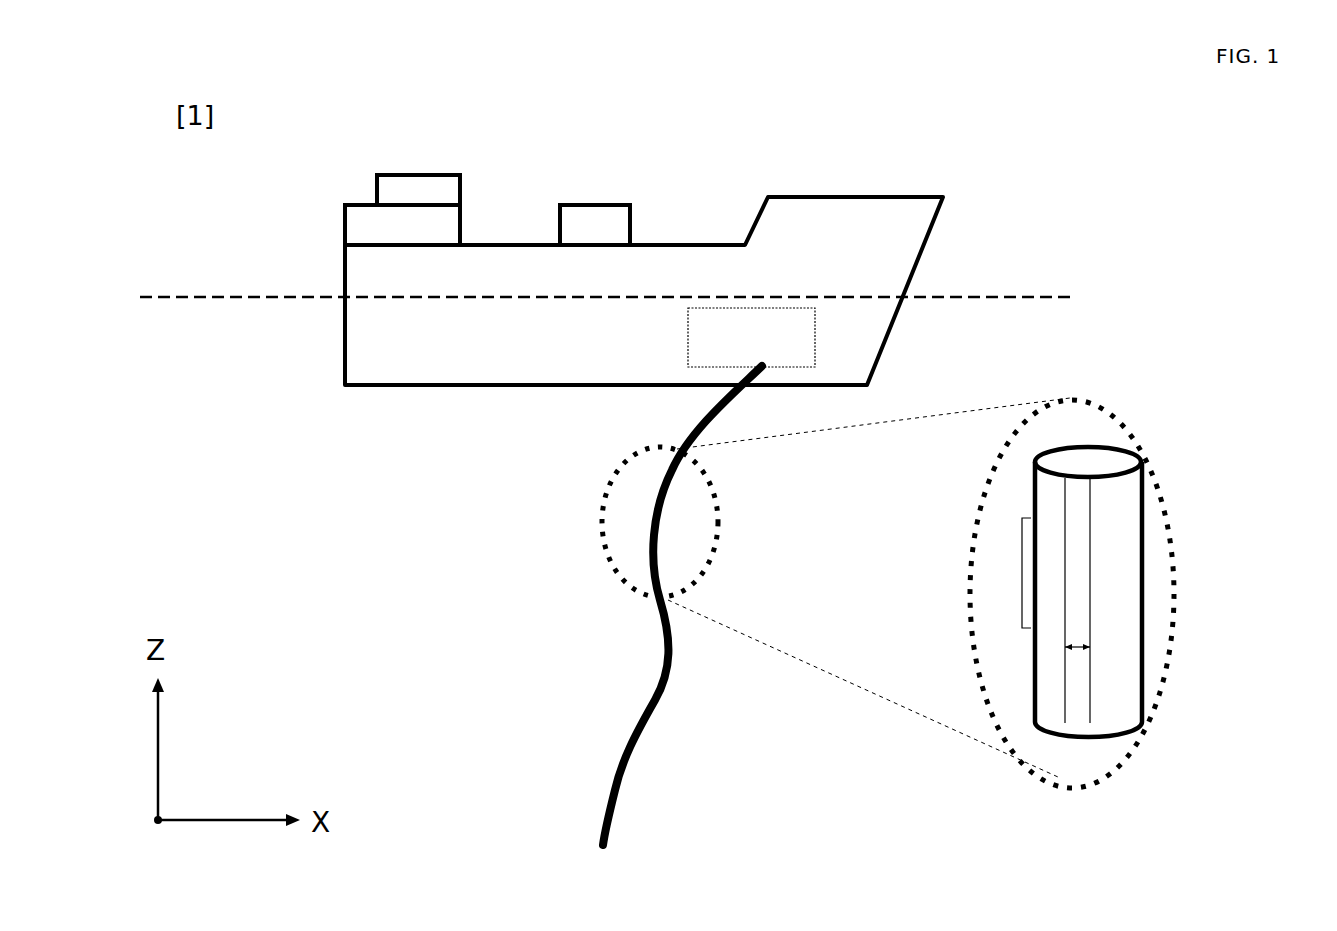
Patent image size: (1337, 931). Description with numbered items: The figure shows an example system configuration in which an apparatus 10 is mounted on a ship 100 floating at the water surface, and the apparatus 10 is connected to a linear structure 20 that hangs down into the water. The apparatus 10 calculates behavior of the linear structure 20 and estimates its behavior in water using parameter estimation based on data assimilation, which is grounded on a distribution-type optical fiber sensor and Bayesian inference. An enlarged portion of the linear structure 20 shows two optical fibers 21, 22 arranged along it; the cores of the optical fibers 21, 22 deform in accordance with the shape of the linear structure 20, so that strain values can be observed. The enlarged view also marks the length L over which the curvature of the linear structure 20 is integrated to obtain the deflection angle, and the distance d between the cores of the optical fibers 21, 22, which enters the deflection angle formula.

The ship 100 is at (820, 197).
The apparatus 10 is at (688, 343).
The linear structure 20 is at (673, 640).
The optical fiber 21 is at (1063, 698).
The optical fiber 22 is at (1093, 677).
The length L is at (1022, 573).
The distance between cores d is at (1080, 643).